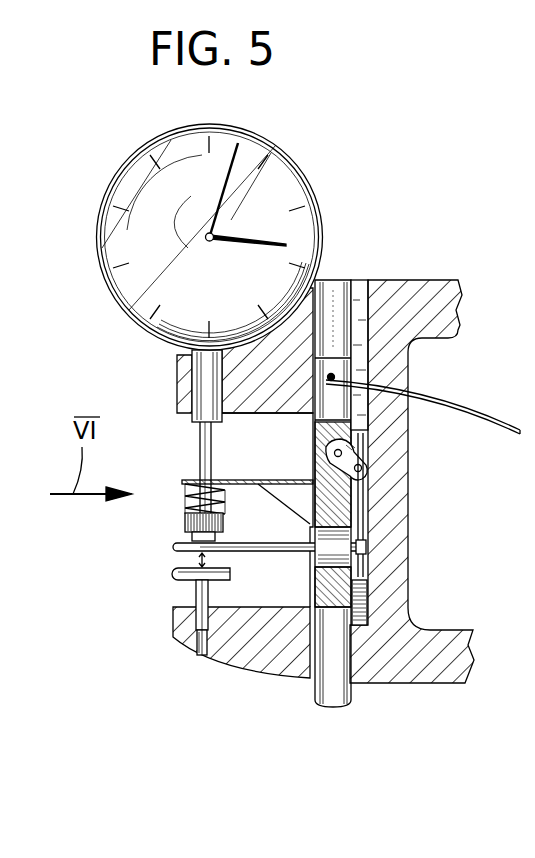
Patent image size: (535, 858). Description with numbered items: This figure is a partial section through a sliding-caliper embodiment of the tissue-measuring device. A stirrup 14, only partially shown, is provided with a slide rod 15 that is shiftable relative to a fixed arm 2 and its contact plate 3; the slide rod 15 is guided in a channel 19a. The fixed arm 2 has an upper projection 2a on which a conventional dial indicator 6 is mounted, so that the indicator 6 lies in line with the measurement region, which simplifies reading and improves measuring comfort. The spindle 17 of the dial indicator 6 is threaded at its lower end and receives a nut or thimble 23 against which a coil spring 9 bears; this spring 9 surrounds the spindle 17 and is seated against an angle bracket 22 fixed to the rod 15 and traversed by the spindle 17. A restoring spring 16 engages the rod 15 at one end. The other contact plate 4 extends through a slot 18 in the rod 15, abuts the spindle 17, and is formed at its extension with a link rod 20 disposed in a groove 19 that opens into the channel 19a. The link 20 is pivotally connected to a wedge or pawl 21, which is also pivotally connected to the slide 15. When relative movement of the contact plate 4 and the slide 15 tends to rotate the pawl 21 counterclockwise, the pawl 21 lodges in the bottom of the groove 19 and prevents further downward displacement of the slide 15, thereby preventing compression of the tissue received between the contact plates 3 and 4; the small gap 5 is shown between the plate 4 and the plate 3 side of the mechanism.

The fixed arm 2 is at (240, 640).
The upper projection 2a is at (290, 414).
The contact plate 3 is at (178, 578).
The contact plate 4 is at (175, 546).
The gap 5 is at (212, 562).
The dial indicator 6 is at (302, 174).
The spring 9 is at (185, 497).
The stirrup 14 is at (416, 292).
The slide rod 15 is at (337, 672).
The restoring spring 16 is at (443, 407).
The spindle 17 is at (204, 454).
The slot 18 is at (368, 560).
The groove 19 is at (360, 290).
The channel 19a is at (346, 295).
The link rod 20 is at (364, 505).
The pawl 21 is at (366, 463).
The angle bracket 22 is at (240, 481).
The nut 23 is at (224, 524).